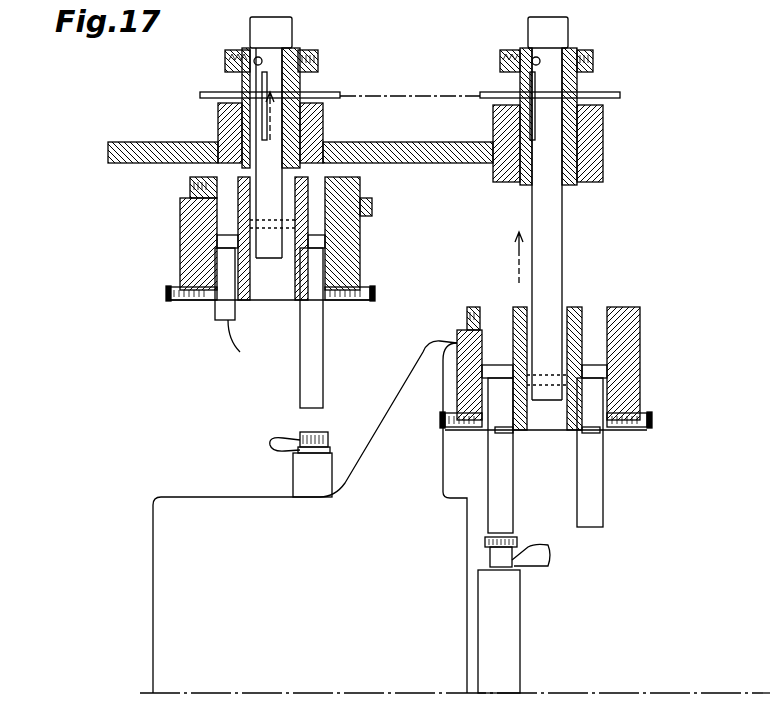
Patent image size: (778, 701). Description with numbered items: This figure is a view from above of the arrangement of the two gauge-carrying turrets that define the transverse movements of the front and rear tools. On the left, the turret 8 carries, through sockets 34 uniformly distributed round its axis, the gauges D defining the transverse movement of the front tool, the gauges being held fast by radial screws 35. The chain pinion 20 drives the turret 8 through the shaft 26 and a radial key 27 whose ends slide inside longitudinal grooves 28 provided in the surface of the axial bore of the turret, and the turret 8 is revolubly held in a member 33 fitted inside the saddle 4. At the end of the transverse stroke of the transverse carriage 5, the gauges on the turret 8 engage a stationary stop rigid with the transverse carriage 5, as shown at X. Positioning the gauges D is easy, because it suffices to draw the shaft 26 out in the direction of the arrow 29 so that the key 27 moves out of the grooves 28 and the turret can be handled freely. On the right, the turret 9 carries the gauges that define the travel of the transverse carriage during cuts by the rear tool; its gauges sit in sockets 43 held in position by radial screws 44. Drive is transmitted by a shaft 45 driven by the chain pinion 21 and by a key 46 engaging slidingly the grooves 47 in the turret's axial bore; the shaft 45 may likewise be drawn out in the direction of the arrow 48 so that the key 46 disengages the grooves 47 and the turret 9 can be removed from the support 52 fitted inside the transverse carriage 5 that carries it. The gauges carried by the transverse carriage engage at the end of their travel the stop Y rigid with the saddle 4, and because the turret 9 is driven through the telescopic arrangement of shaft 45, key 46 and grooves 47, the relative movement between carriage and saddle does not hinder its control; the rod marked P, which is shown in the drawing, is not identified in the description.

The shaft 26 is at (268, 57).
The arrow 29 is at (268, 117).
The radial key 27 is at (268, 220).
The chain pinion 20 is at (330, 92).
The saddle 4 is at (392, 148).
The turret 8 is at (335, 192).
The member 33 is at (185, 238).
The radial screws 35 is at (372, 292).
The sockets 34 is at (325, 305).
The longitudinal grooves 28 is at (295, 282).
The gauges D is at (305, 352).
The chain pinion 21 is at (616, 97).
The shaft 45 is at (565, 245).
The arrow 48 is at (519, 258).
The turret 9 is at (605, 307).
The key 46 is at (547, 380).
The support 52 is at (632, 375).
The radial screws 44 is at (650, 421).
The grooves 47 is at (570, 420).
The sockets 43 is at (610, 440).
The piston rod P is at (583, 493).
The stop Y is at (512, 630).
The transverse carriage 5 is at (404, 383).
The stationary stop X is at (300, 470).